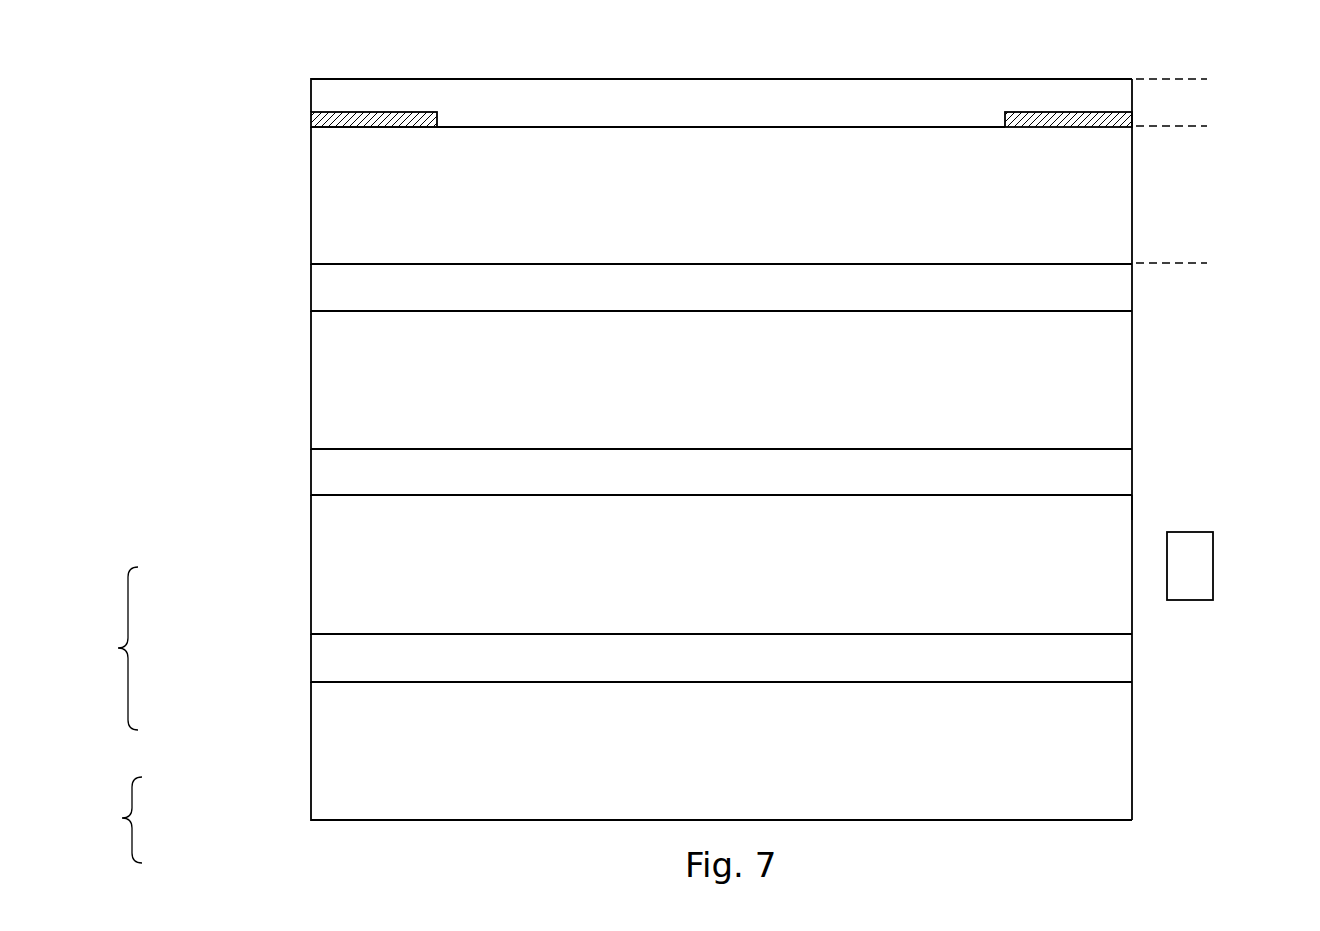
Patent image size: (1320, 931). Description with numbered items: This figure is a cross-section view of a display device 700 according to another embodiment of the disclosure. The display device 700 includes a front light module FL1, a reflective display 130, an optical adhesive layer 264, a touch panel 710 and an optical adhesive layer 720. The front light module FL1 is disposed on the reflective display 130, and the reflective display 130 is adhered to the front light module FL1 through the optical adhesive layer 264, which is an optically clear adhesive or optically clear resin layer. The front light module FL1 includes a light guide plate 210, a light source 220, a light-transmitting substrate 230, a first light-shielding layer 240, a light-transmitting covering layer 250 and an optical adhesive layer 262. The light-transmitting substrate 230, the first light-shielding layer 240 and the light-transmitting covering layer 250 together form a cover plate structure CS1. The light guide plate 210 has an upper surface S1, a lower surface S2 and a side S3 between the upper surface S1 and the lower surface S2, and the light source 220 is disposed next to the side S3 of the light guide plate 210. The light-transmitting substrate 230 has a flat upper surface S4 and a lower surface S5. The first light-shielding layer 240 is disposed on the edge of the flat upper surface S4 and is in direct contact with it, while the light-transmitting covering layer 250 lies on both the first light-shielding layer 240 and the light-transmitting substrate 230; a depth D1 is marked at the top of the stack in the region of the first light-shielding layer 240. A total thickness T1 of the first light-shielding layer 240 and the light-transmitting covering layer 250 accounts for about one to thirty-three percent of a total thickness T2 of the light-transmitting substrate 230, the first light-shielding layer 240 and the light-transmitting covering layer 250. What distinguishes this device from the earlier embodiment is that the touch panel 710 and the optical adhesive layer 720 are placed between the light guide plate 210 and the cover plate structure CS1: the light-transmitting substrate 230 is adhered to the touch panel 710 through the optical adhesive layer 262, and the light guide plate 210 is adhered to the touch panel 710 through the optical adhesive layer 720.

The display device 700 is at (162, 75).
The light-transmitting covering layer 250 is at (313, 92).
The first light-shielding layer 240 is at (313, 116).
The flat upper surface S4 is at (437, 127).
The recess depth D1 is at (388, 143).
The light-transmitting substrate 230 is at (313, 189).
The lower surface S5 is at (377, 264).
The optical adhesive layer 262 is at (313, 284).
The touch panel 710 is at (313, 371).
The optical adhesive layer 720 is at (313, 469).
The upper surface S1 is at (420, 497).
The light guide plate 210 is at (313, 556).
The lower surface S2 is at (377, 634).
The optical adhesive layer 264 is at (313, 656).
The reflective display 130 is at (313, 747).
The side S3 is at (1133, 507).
The light source 220 is at (1203, 565).
The total thickness T1 is at (1153, 79).
The total thickness T2 is at (1201, 79).
The front light module FL1 is at (125, 648).
The cover plate structure CS1 is at (127, 820).